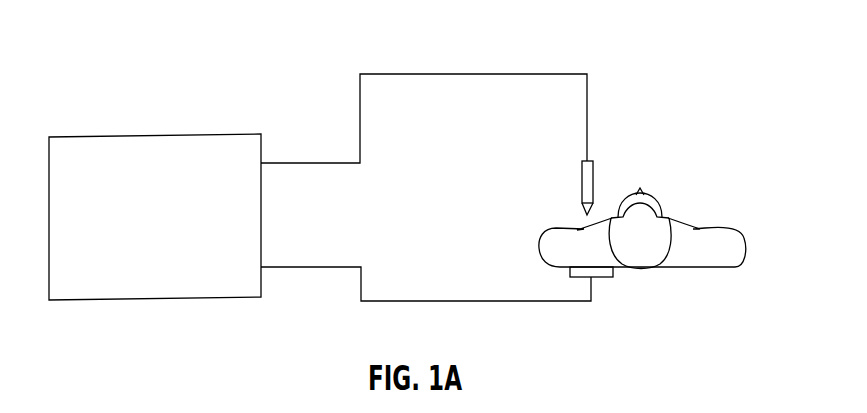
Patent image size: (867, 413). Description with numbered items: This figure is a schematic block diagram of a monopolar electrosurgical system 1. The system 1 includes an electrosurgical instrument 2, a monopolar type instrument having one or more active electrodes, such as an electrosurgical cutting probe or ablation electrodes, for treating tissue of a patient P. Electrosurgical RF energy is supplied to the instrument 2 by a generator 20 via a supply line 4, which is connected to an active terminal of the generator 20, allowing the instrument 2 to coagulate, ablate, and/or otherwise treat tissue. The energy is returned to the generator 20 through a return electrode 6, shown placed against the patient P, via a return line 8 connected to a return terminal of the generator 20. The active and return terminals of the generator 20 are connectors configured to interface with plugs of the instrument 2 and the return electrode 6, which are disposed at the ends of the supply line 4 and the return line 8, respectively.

The monopolar electrosurgical system 1 is at (165, 63).
The generator 20 is at (100, 135).
The supply line 4 is at (471, 73).
The electrosurgical instrument 2 is at (581, 183).
The patient P is at (715, 205).
The return electrode 6 is at (604, 280).
The return line 8 is at (490, 302).